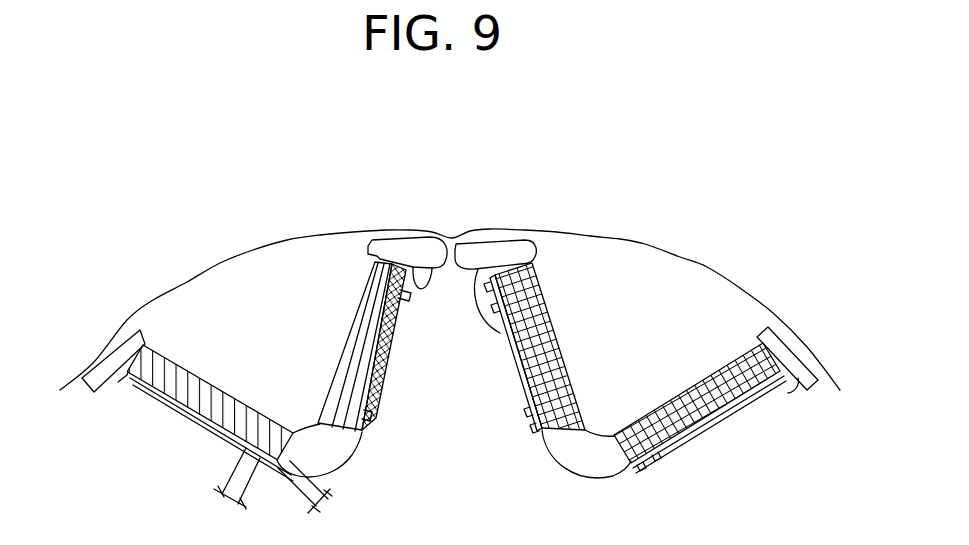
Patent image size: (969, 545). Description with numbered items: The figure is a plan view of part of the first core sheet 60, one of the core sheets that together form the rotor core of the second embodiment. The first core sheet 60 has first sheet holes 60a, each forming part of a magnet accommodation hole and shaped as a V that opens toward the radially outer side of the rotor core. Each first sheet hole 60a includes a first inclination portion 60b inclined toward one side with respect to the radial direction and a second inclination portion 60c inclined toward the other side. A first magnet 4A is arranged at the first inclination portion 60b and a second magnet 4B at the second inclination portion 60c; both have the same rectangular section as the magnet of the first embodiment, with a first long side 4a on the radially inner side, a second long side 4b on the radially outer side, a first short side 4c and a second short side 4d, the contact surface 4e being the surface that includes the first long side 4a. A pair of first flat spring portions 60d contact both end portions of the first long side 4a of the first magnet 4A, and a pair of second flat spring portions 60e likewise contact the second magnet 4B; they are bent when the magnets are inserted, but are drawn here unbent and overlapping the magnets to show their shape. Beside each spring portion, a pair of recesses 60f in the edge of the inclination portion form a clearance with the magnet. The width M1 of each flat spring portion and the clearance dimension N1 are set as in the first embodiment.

The first core sheet 60 is at (297, 232).
The first sheet hole 60a is at (136, 322).
The first inclination portion 60b is at (358, 307).
The second inclination portion 60c is at (197, 372).
The first flat spring portion 60d is at (388, 262).
The second flat spring portion 60e is at (160, 346).
The recess 60f is at (431, 268).
The first magnet 4A is at (703, 375).
The second magnet 4B is at (530, 330).
The first long side 4a is at (493, 331).
The second long side 4b is at (557, 330).
The first short side 4c is at (587, 427).
The second short side 4d is at (503, 287).
The contact surface 4e is at (788, 393).
The width of flat spring portion M1 is at (223, 489).
The clearance dimension N1 is at (312, 498).